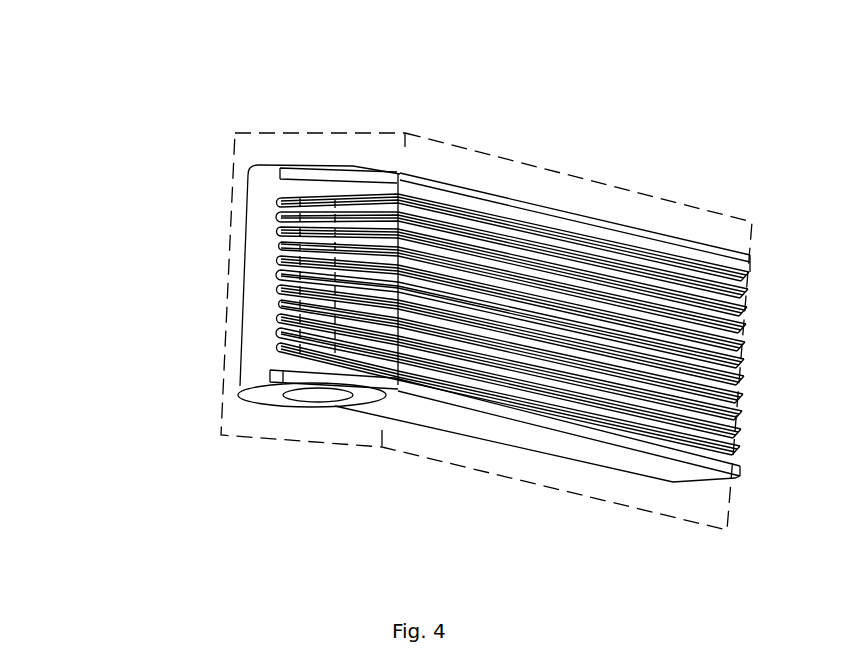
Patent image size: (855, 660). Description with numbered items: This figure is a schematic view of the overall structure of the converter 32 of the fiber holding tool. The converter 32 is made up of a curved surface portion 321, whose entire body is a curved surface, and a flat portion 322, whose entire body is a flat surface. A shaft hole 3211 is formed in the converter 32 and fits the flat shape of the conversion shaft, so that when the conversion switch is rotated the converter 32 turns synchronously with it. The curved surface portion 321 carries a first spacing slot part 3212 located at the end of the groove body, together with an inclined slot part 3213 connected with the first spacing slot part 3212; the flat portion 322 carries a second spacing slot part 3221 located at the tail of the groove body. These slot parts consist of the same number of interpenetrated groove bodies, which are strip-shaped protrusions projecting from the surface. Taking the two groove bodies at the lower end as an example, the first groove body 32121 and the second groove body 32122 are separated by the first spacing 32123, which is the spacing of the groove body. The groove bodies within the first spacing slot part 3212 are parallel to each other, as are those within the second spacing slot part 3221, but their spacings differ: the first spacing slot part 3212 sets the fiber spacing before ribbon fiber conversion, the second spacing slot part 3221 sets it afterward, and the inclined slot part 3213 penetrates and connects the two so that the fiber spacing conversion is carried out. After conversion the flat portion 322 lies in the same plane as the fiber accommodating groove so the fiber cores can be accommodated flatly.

The converter 32 is at (401, 282).
The curved surface portion 321 is at (399, 296).
The shaft hole 3211 is at (320, 400).
The first spacing slot part 3212 is at (399, 280).
The inclined slot part 3213 is at (355, 205).
The first groove body 32121 is at (273, 320).
The second groove body 32122 is at (278, 350).
The first spacing 32123 is at (278, 337).
The flat portion 322 is at (510, 335).
The second spacing slot part 3221 is at (472, 220).